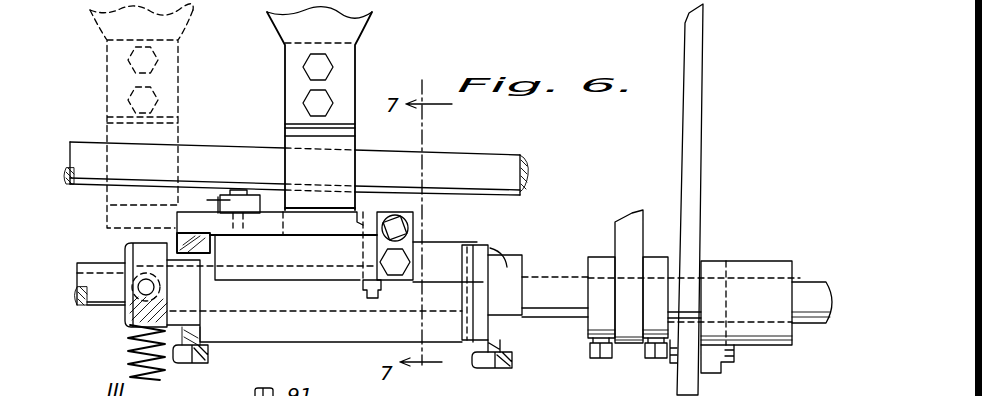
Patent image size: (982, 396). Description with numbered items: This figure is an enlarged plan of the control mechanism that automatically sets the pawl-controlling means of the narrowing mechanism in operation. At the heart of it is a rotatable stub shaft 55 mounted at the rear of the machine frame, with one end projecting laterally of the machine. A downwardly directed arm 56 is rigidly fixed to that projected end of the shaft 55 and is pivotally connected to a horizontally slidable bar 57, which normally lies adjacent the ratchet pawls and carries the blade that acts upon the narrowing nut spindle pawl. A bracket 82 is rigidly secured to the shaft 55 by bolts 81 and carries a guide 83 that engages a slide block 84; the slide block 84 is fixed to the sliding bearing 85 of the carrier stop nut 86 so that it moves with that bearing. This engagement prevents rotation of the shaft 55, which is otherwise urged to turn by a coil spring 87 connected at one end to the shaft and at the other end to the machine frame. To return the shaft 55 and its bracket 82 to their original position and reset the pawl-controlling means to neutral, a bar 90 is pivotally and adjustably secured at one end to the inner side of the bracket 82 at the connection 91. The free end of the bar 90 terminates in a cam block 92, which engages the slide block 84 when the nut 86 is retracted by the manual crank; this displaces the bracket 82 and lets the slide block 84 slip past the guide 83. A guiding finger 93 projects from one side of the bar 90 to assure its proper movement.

The carrier stop nut 86 is at (295, 33).
The sliding bearing 85 is at (287, 135).
The slide block 84 is at (316, 207).
The guiding finger 93 is at (218, 200).
The cam block 92 is at (203, 252).
The bar 90 is at (336, 222).
The pivotal and adjustable securing point 91 is at (414, 220).
The guide 83 is at (467, 243).
The bracket 82 is at (367, 330).
The bolts 81 is at (207, 358).
The coil spring 87 is at (135, 345).
The rotatable stub shaft 55 is at (557, 282).
The downwardly directed arm 56 is at (743, 268).
The horizontally slidable bar 57 is at (690, 210).